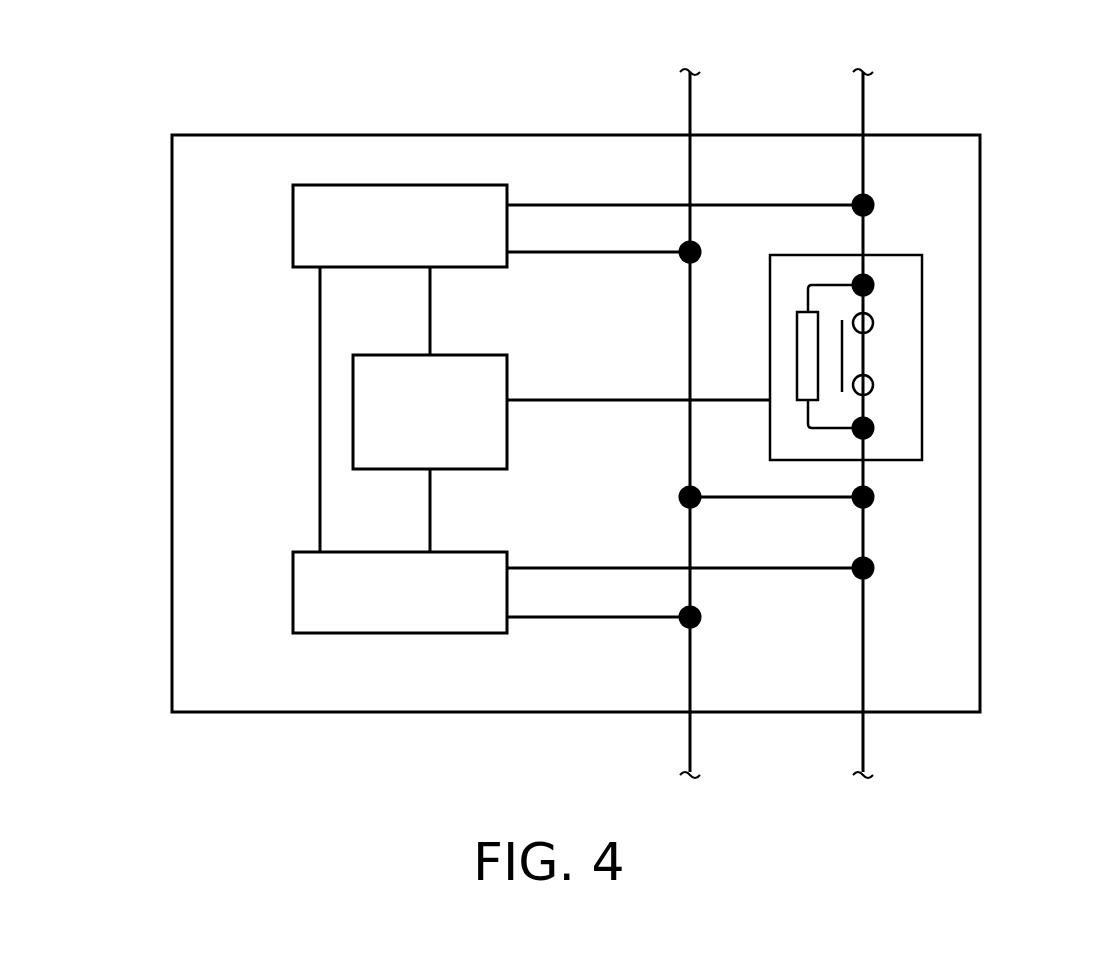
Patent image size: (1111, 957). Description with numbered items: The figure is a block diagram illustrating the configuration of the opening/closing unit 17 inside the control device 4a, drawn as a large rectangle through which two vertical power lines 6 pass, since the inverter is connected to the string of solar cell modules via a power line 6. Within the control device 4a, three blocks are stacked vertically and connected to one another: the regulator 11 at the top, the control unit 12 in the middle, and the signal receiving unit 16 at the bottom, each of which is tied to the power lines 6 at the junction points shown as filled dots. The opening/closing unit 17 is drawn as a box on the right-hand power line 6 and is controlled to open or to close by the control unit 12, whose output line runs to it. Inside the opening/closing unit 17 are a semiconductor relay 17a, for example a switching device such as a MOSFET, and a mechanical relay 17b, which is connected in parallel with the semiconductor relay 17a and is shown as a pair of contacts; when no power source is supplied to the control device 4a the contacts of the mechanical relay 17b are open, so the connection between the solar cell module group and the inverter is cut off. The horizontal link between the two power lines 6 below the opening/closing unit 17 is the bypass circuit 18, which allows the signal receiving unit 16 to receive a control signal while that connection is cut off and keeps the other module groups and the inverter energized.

The control device 4a is at (958, 135).
The power line 6 is at (866, 745).
The regulator 11 is at (293, 231).
The control unit 12 is at (353, 416).
The signal receiving unit 16 is at (293, 600).
The opening/closing unit 17 is at (852, 357).
The semiconductor relay 17a is at (808, 350).
The mechanical relay 17b is at (873, 385).
The bypass circuit 18 is at (776, 497).